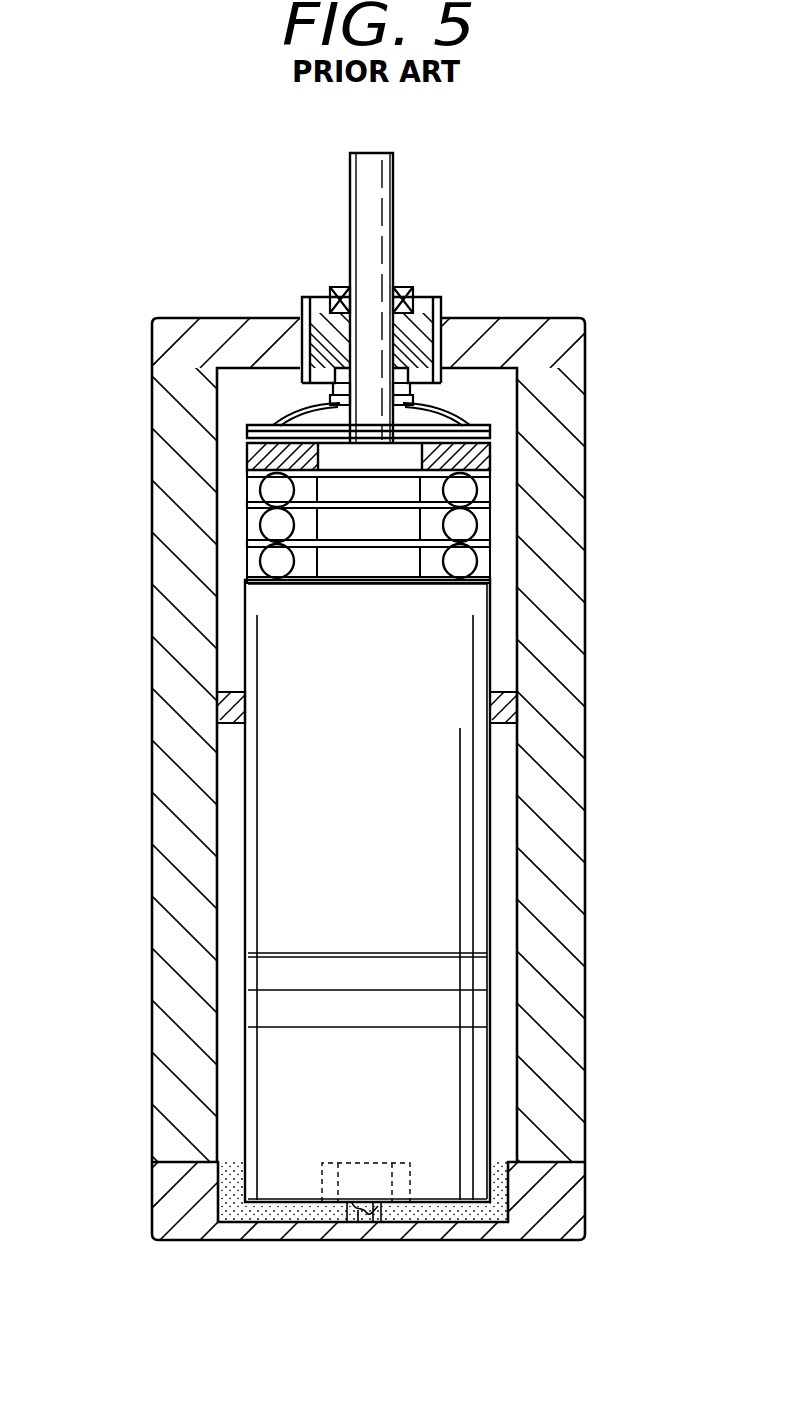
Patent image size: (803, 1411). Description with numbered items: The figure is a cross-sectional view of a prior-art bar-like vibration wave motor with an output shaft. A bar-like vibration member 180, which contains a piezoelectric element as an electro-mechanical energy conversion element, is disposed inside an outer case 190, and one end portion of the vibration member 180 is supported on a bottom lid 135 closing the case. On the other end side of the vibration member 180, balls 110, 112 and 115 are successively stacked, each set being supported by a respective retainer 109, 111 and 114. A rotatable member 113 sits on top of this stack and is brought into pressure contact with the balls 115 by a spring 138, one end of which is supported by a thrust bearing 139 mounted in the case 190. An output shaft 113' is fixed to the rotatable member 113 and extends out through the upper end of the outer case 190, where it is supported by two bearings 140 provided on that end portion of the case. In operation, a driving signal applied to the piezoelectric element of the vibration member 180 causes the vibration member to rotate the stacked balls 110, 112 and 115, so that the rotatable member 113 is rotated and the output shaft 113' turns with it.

The output shaft 113' is at (418, 297).
The bearings 140 is at (339, 288).
The spring 138 is at (443, 410).
The thrust bearing 139 is at (333, 394).
The rotatable member 113 is at (292, 440).
The balls 115 is at (263, 493).
The balls 112 is at (263, 530).
The balls 110 is at (263, 567).
The retainer 114 is at (492, 485).
The retainer 111 is at (492, 523).
The retainer 109 is at (492, 562).
The outer case 190 is at (565, 663).
The vibration member 180 is at (275, 875).
The bottom lid 135 is at (562, 1188).